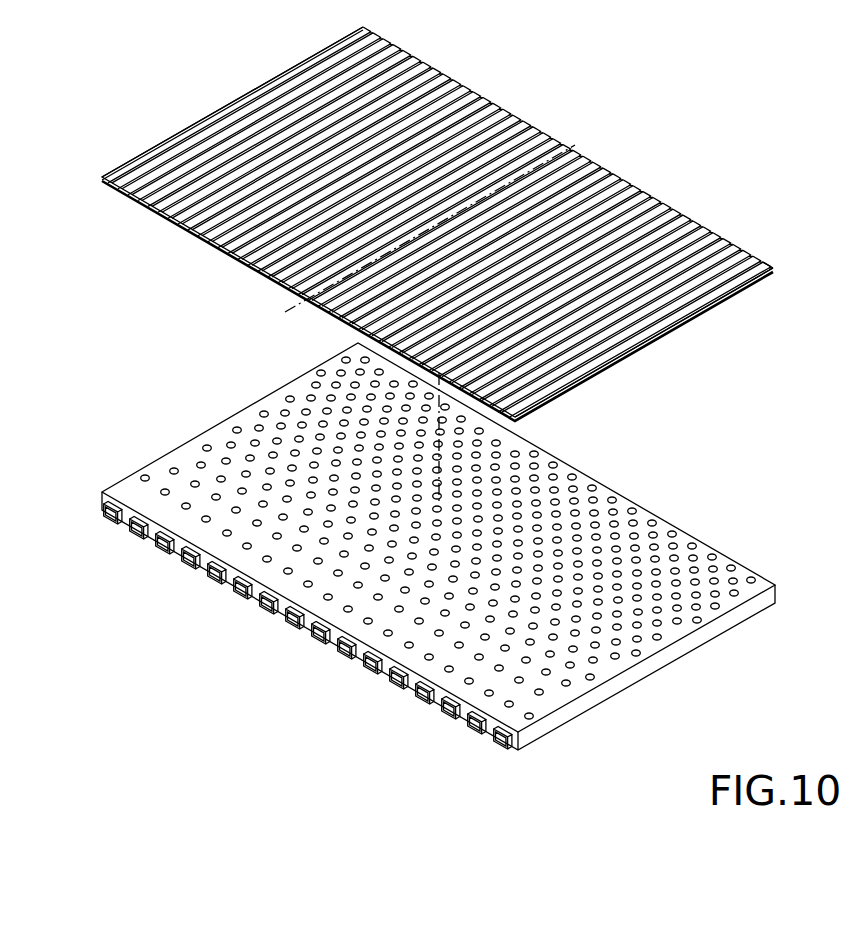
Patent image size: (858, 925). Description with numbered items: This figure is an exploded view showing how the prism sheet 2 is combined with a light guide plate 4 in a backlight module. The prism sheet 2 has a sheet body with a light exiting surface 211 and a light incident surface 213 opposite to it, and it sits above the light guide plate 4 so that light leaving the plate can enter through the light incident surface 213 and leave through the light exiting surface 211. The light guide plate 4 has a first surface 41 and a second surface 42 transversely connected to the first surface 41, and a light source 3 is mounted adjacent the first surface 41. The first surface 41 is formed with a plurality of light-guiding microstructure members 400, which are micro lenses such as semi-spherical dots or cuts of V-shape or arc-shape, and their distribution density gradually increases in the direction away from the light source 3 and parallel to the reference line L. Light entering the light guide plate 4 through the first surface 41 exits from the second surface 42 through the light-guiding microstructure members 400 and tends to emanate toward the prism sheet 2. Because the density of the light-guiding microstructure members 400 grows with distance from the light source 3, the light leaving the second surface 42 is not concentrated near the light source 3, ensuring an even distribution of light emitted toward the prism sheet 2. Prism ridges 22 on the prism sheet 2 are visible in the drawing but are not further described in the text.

The prism sheet 2 is at (467, 224).
The prism ridges 22 is at (693, 218).
The light exiting surface 211 is at (760, 258).
The light incident surface 213 is at (722, 298).
The reference line L is at (570, 148).
The light guide plate 4 is at (438, 546).
The light-guiding microstructure members 400 is at (668, 555).
The second surface 42 is at (667, 633).
The light source 3 is at (308, 626).
The first surface 41 is at (360, 652).